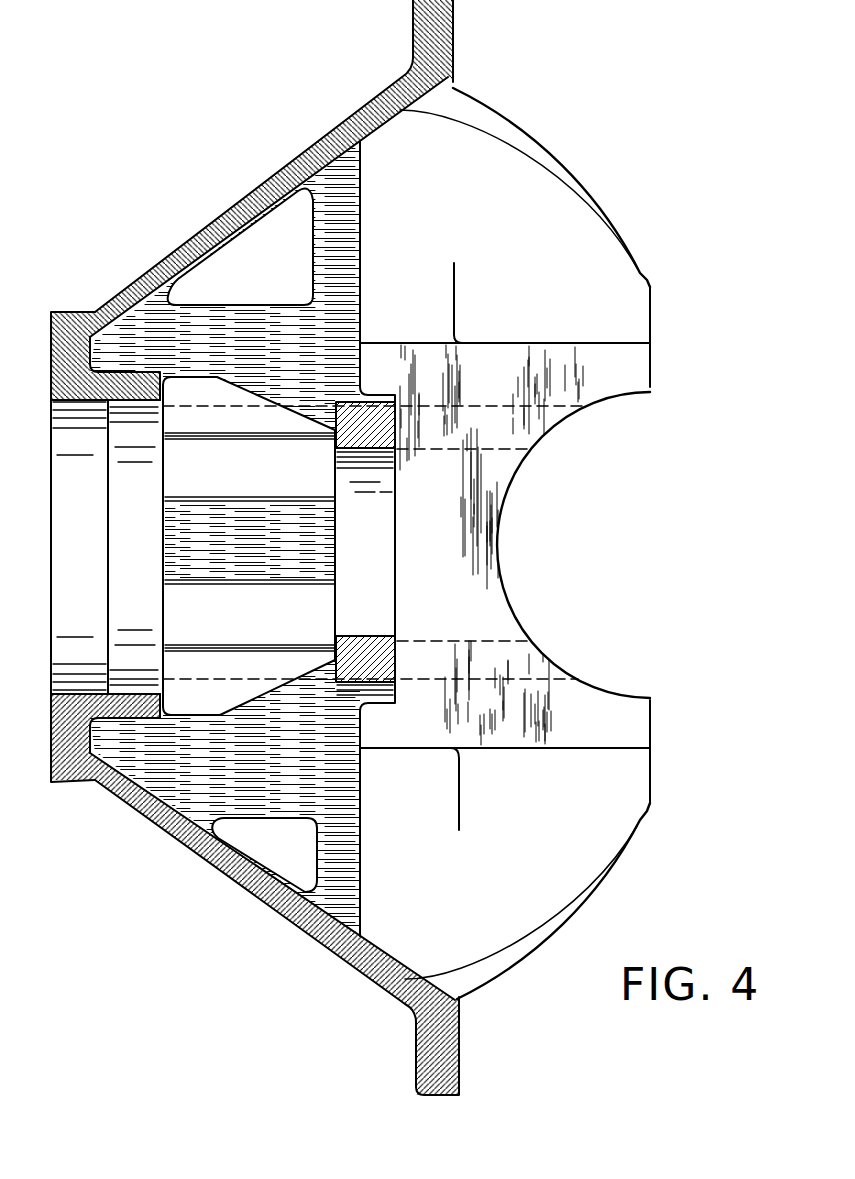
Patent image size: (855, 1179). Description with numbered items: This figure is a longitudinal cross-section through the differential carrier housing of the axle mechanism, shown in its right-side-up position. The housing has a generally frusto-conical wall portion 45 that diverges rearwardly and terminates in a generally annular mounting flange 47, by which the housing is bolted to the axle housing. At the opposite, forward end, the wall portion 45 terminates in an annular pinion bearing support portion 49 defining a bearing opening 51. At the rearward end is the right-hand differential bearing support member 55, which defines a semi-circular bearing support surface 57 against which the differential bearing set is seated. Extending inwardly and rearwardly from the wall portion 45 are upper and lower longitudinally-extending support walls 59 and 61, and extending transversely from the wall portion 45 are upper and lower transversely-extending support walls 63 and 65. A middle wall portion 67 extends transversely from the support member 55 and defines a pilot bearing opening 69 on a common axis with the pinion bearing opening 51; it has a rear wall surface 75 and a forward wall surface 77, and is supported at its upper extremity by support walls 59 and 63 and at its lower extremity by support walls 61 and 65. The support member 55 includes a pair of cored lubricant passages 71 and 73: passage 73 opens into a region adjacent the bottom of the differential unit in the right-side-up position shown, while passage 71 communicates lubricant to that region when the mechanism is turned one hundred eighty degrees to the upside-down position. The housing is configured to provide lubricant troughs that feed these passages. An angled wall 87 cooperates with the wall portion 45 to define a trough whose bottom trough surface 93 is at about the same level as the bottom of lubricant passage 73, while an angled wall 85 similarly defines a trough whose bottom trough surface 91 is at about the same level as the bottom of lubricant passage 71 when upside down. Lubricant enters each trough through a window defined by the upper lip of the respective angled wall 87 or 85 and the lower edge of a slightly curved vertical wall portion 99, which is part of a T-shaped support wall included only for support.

The frusto-conical wall portion 45 is at (248, 208).
The mounting flange 47 is at (442, 38).
The pinion bearing support portion 49 is at (72, 322).
The bearing opening 51 is at (132, 402).
The right-hand differential bearing support member 55 is at (670, 362).
The semi-circular bearing support surface 57 is at (500, 525).
The upper longitudinally-extending support wall 59 is at (275, 343).
The lower longitudinally-extending support wall 61 is at (305, 775).
The upper transversely-extending support wall 63 is at (360, 255).
The lower transversely-extending support wall 65 is at (360, 870).
The middle wall portion 67 is at (377, 452).
The pilot bearing opening 69 is at (372, 636).
The lubricant passage 71 is at (480, 435).
The lubricant passage 73 is at (453, 670).
The rear wall surface 75 is at (395, 560).
The forward wall surface 77 is at (335, 557).
The angled wall 85 is at (237, 427).
The angled wall 87 is at (215, 660).
The trough surface 91 is at (287, 410).
The trough surface 93 is at (278, 675).
The vertical wall portion 99 is at (203, 538).